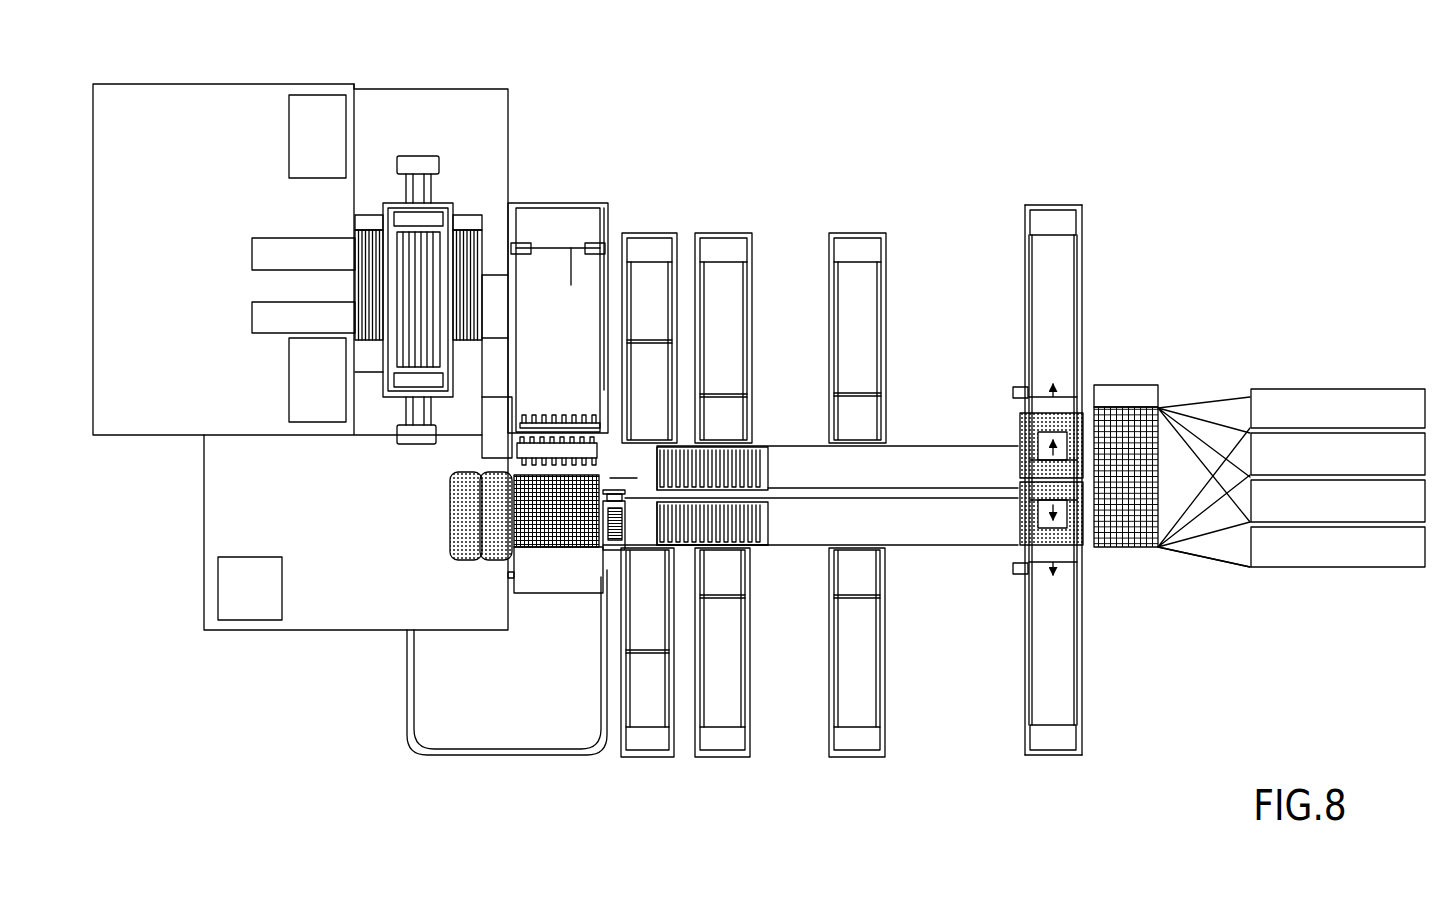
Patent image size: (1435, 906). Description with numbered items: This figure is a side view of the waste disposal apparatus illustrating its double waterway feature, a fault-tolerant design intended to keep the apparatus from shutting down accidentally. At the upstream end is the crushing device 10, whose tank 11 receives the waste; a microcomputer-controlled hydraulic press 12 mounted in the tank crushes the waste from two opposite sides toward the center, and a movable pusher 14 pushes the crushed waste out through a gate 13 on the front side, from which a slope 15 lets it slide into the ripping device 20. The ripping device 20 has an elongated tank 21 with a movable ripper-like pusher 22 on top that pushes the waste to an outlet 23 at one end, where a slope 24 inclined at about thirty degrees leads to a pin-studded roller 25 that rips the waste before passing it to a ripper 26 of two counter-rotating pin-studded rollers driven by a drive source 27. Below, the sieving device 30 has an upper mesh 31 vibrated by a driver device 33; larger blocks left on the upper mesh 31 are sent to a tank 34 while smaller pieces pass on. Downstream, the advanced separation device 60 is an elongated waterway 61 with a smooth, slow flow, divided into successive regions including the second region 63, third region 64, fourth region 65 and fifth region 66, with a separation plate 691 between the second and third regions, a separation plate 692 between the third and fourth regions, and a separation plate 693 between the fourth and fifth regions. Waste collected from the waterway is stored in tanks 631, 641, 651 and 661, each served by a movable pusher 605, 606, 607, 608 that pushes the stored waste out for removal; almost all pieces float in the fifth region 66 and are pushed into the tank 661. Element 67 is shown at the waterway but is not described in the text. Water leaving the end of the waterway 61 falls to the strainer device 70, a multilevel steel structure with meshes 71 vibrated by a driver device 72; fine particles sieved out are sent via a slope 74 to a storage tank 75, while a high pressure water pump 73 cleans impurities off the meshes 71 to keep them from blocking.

The crushing device 10 is at (425, 112).
The tank 11 is at (386, 246).
The microcomputer-controlled hydraulic press 12 is at (428, 163).
The gate 13 is at (453, 343).
The movable pusher 14 is at (395, 287).
The slope 15 is at (490, 333).
The ripping device 20 is at (624, 228).
The tank 21 is at (608, 232).
The movable ripper-like pusher 22 is at (541, 245).
The outlet 23 is at (601, 421).
The slope 24 is at (572, 246).
The roller 25 is at (538, 420).
The ripper 26 is at (570, 455).
The drive source 27 is at (497, 418).
The sieving device 30 is at (490, 542).
The upper mesh 31 is at (520, 528).
The driver device 33 is at (456, 513).
The tank 34 is at (513, 740).
The advanced separation device 60 is at (794, 499).
The waterway 61 is at (887, 440).
The second region 63 is at (620, 499).
The third region 64 is at (745, 520).
The fourth region 65 is at (858, 470).
The fifth region 66 is at (1006, 477).
The conveyor edge 67 is at (735, 545).
The strainer device 70 is at (1136, 380).
The meshes 71 is at (1115, 525).
The driver device 72 is at (1160, 395).
The high pressure water pump 73 is at (1146, 552).
The slope 74 is at (1200, 550).
The storage tank 75 is at (1303, 405).
The movable pusher 605 is at (655, 340).
The movable pusher 606 is at (725, 396).
The movable pusher 607 is at (856, 600).
The movable pusher 608 is at (1040, 398).
The tank 631 is at (648, 740).
The tank 641 is at (737, 248).
The tank 651 is at (864, 248).
The tank 661 is at (1053, 230).
The separation plate 691 is at (655, 526).
The separation plate 692 is at (770, 466).
The separation plate 693 is at (1019, 452).